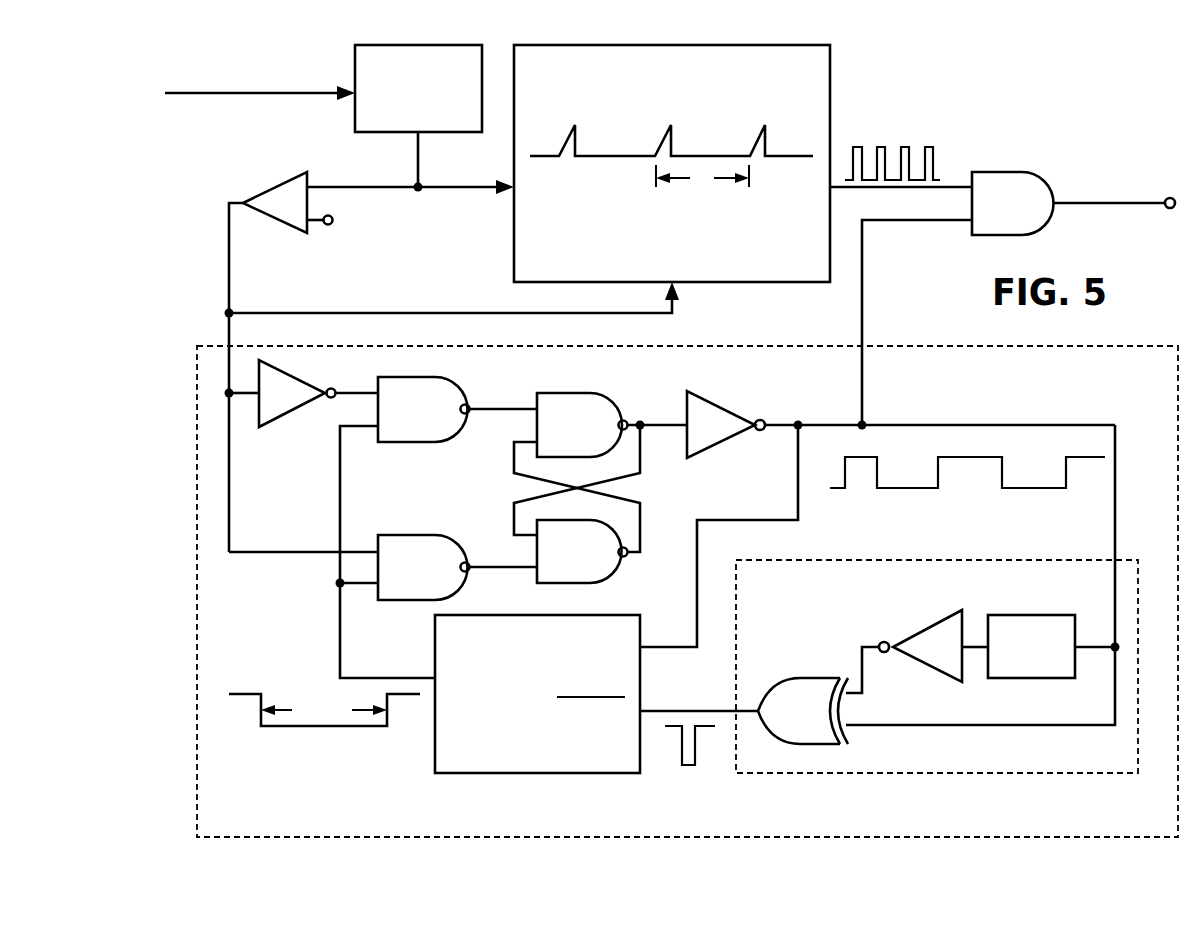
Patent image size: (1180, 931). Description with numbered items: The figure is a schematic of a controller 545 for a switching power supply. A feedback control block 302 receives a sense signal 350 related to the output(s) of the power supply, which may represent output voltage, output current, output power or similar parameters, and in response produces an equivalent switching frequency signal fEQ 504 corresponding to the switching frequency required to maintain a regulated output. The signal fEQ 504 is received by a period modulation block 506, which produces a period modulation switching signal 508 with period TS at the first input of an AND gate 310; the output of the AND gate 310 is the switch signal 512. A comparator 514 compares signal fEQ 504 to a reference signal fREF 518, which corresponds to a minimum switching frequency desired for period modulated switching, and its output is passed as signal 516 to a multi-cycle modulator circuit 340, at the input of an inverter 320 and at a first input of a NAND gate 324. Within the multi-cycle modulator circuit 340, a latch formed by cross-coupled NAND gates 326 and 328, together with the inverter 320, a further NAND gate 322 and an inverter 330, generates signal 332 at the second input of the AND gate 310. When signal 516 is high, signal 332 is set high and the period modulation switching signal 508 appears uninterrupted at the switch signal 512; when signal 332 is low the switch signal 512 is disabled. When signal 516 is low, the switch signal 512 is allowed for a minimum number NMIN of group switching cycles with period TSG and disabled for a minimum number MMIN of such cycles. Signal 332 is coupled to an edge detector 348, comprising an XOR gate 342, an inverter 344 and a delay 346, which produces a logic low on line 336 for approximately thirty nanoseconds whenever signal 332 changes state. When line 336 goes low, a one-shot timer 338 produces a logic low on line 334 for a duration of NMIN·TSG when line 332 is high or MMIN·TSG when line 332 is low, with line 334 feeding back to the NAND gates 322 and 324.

The sense signal 350 is at (250, 87).
The feedback control block 302 is at (348, 63).
The equivalent switching frequency signal fEQ 504 is at (430, 193).
The comparator 514 is at (257, 192).
The reference signal fREF 518 is at (353, 237).
The comparator output signal 516 is at (237, 247).
The period modulation block 506 is at (837, 118).
The period modulation switching signal 508 is at (942, 167).
The AND gate 310 is at (1013, 203).
The switch signal 512 is at (1132, 215).
The controller 545 is at (1083, 56).
The multi-cycle modulator circuit 340 is at (360, 840).
The inverter 320 is at (302, 393).
The NAND gate 322 is at (457, 409).
The NAND gate 324 is at (383, 567).
The one-shot timer output line 334 is at (333, 652).
The NAND gate 326 is at (600, 464).
The NAND gate 328 is at (577, 512).
The inverter 330 is at (726, 424).
The enable signal 332 is at (900, 225).
The one-shot timer 338 is at (533, 780).
The edge detector output line 336 is at (667, 705).
The edge detector 348 is at (990, 777).
The delay 346 is at (1023, 683).
The inverter 344 is at (917, 651).
The XOR gate 342 is at (803, 711).